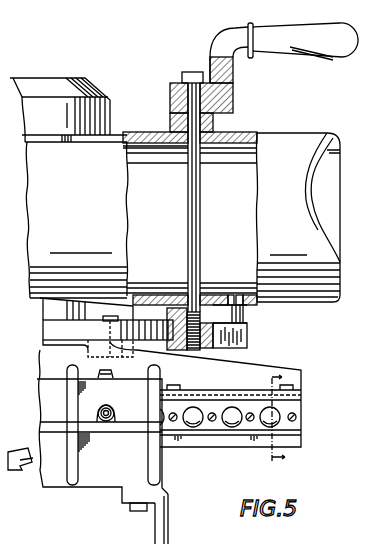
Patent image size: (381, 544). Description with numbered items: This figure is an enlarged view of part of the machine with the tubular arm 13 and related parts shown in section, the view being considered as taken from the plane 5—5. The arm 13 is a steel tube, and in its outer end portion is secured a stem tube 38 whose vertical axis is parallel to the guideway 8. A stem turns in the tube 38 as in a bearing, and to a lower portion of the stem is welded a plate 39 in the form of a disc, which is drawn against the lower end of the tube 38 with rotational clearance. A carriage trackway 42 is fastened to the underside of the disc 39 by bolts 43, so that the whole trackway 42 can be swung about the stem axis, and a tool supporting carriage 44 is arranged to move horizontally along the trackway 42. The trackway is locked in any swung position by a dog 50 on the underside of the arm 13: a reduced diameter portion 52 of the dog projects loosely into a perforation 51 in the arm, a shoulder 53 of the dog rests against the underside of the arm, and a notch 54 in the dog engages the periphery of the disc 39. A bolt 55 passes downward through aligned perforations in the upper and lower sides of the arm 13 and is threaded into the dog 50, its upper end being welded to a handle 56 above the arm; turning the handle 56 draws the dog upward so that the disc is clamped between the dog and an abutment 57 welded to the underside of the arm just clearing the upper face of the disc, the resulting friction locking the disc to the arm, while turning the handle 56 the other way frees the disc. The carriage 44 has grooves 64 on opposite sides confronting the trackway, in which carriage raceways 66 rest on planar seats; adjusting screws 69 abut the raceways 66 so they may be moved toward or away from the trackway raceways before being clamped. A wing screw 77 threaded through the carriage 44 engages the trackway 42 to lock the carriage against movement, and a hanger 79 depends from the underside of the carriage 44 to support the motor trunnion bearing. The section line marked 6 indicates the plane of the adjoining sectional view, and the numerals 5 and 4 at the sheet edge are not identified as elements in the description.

The handle 56 is at (235, 80).
The bolt 55 is at (200, 248).
The arm 13 is at (298, 217).
The abutment 57 is at (151, 297).
The reduced diameter portion 52 is at (231, 296).
The perforation 51 is at (239, 296).
The stem tube 38 is at (45, 306).
The plate 39 is at (48, 330).
The bolts 43 is at (118, 318).
The notch 54 is at (183, 341).
The shoulder 53 is at (245, 320).
The dog 50 is at (248, 345).
The carriage trackway 42 is at (260, 365).
The section line 6- 6 is at (272, 417).
The tool supporting carriage 44 is at (102, 430).
The hanger 79 is at (162, 523).
The guideway 8 is at (3, 373).
The element 5 is at (3, 388).
The grooves 64 is at (3, 401).
The adjusting screws 69 is at (0, 409).
The carriage raceways 66 is at (5, 428).
The wing screw 77 is at (14, 470).
The element 4 is at (3, 497).